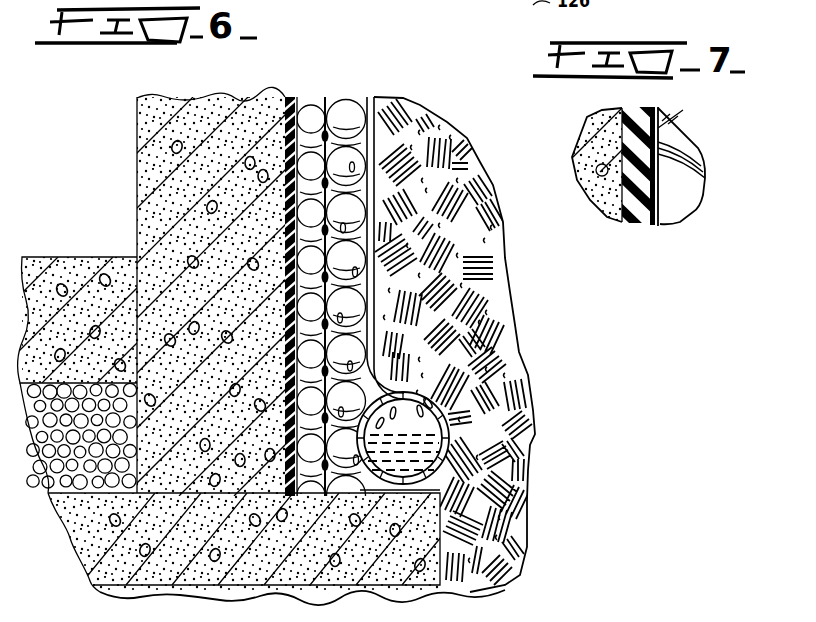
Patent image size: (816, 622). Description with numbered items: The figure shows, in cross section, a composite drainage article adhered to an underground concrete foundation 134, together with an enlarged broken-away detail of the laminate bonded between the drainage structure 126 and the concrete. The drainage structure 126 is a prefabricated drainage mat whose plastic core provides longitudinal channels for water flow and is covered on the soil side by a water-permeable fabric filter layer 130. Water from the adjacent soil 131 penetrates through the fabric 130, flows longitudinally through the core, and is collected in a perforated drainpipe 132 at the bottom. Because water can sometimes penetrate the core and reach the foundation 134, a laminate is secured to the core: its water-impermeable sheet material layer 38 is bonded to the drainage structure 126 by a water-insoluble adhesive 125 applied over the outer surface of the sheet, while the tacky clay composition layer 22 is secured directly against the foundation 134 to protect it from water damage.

In FIG. 6, the clay composition layer 22 is at (290, 97).
In FIG. 7, the clay composition layer 22 is at (640, 108).
In FIG. 6, the water-impermeable sheet material layer 38 is at (299, 113).
In FIG. 7, the water-impermeable sheet material layer 38 is at (660, 108).
In FIG. 7, the water-insoluble adhesive 125 is at (658, 129).
In FIG. 7, the drainage structure 126 is at (699, 153).
In FIG. 6, the water-permeable fabric filter layer 130 is at (372, 110).
In FIG. 6, the soil 131 is at (454, 147).
In FIG. 6, the perforated drainpipe 132 is at (447, 434).
In FIG. 6, the concrete foundation 134 is at (225, 100).